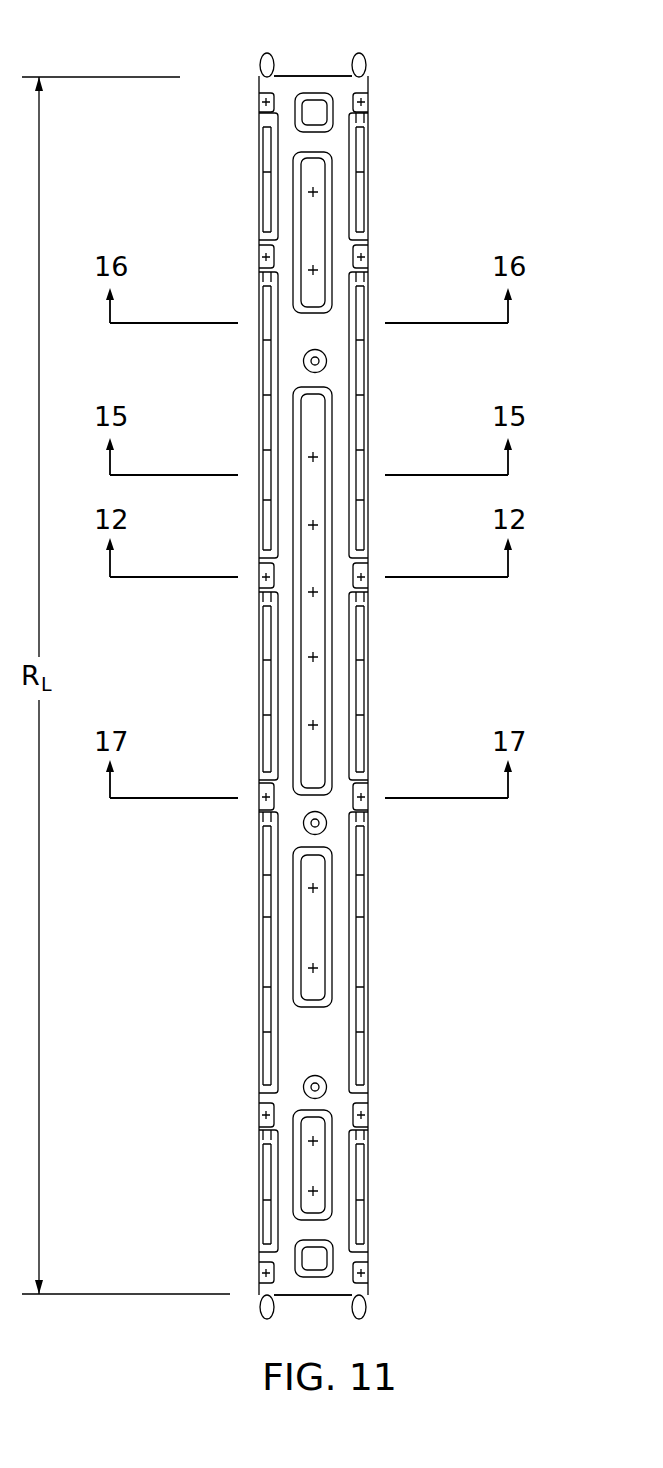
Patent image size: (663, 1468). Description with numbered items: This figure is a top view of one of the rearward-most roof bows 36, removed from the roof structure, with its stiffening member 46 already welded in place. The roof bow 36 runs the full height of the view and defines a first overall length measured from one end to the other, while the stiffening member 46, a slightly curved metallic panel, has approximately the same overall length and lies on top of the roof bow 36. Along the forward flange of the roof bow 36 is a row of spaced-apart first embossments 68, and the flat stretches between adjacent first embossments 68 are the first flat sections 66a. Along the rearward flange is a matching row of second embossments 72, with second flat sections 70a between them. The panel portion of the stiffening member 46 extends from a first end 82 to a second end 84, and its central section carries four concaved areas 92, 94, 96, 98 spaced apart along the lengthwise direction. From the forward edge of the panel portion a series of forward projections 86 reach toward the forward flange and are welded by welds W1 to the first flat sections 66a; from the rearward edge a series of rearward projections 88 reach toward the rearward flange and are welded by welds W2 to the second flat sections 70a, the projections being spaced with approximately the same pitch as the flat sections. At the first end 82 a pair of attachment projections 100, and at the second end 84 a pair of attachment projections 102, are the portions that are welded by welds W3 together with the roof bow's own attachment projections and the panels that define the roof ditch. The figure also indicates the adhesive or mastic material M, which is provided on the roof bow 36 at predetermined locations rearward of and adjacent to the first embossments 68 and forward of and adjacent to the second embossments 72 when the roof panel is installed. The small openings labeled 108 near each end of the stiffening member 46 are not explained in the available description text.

The roof bow 36 is at (368, 118).
The stiffening member 46 is at (333, 140).
The first flat sections 66a is at (263, 283).
The first embossments 68 is at (264, 182).
The second flat sections 70a is at (362, 236).
The second embossments 72 is at (366, 403).
The first end 82 is at (296, 88).
The second end 84 is at (333, 1287).
The forward projections 86 is at (264, 266).
The rearward projections 88 is at (364, 274).
The concaved area 92 is at (310, 218).
The concaved area 94 is at (316, 425).
The concaved area 96 is at (316, 938).
The concaved area 98 is at (310, 1175).
The attachment projections 100 is at (265, 53).
The attachment projections 102 is at (260, 1300).
The square aperture 108 is at (316, 112).
The adhesive or mastic material M is at (268, 147).
The welds W1 is at (262, 102).
The welds W2 is at (365, 102).
The welds W3 is at (260, 64).